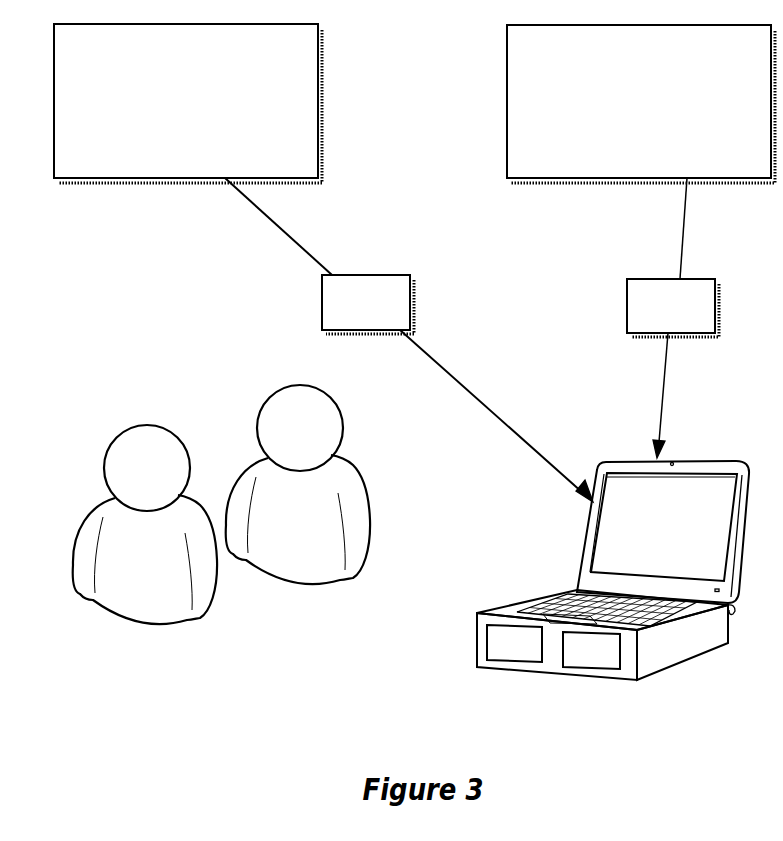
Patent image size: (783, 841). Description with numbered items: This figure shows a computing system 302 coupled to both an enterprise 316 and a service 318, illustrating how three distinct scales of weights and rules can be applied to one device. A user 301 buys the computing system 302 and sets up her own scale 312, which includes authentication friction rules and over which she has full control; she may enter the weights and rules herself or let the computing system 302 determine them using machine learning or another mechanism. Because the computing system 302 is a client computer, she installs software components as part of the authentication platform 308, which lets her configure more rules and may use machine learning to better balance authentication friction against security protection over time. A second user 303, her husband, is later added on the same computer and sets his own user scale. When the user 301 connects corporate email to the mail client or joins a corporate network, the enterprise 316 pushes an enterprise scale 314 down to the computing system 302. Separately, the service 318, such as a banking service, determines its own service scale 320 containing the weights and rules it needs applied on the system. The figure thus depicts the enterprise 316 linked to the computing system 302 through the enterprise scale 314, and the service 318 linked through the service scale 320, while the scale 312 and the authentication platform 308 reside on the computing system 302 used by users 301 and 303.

The user 301 is at (350, 470).
The computing system 302 is at (613, 570).
The user 303 is at (145, 524).
The authentication platform 308 is at (591, 650).
The scale 312 is at (514, 643).
The enterprise scale 314 is at (368, 304).
The enterprise 316 is at (188, 103).
The service 318 is at (641, 104).
The service scale 320 is at (673, 308).